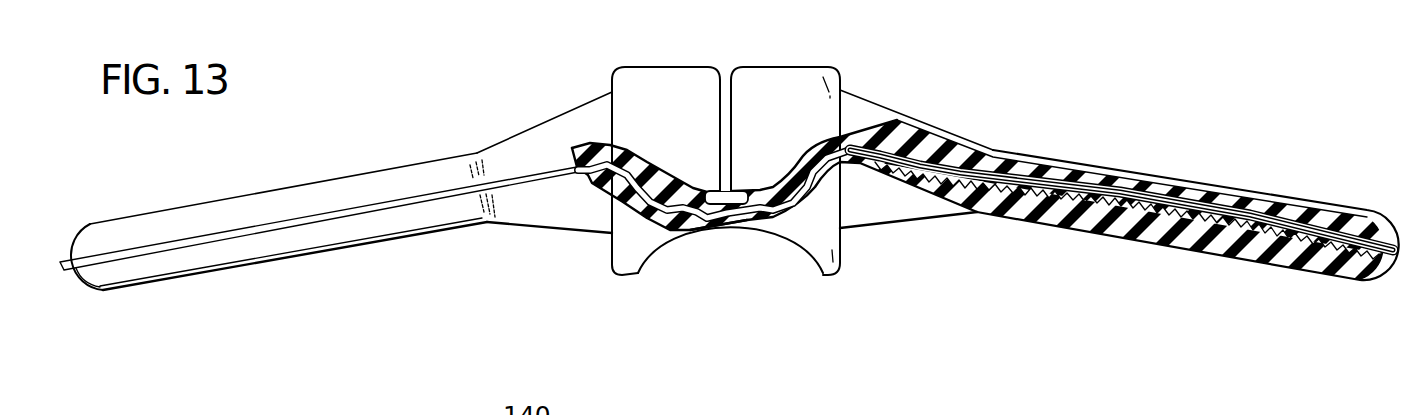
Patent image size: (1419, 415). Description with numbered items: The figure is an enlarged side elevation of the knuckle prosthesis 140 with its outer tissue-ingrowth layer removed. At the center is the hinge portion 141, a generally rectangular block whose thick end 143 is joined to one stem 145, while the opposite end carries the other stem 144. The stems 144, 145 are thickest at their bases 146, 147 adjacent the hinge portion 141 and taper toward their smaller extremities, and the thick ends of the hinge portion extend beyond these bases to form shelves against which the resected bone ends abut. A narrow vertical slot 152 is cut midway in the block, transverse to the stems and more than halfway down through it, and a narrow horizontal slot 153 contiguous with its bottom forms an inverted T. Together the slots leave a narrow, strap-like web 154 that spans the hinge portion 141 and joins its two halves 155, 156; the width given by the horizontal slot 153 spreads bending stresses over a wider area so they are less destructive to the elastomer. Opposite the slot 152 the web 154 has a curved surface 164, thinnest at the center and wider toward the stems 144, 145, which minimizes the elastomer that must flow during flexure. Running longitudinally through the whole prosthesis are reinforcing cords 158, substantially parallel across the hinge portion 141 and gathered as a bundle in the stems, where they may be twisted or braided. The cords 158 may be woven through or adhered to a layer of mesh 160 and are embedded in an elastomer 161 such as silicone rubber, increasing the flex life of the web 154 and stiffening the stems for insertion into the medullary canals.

The knuckle prosthesis 140 is at (543, 92).
The hinge portion 141 is at (645, 265).
The thick end 143 is at (840, 213).
The stem 144 is at (228, 200).
The stem 145 is at (1263, 195).
The base 146 is at (603, 215).
The base 147 is at (852, 112).
The vertical slot 152 is at (723, 87).
The horizontal slot 153 is at (718, 222).
The web 154 is at (712, 222).
The half of hinge portion 155 is at (643, 65).
The half of hinge portion 156 is at (787, 65).
The cords 158 is at (625, 160).
The mesh layer 160 is at (775, 228).
The elastomer 161 is at (1128, 228).
The curved surface 164 is at (780, 216).